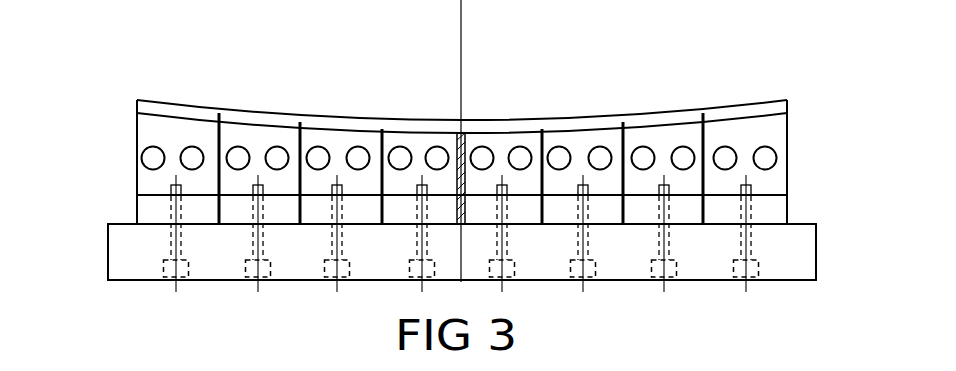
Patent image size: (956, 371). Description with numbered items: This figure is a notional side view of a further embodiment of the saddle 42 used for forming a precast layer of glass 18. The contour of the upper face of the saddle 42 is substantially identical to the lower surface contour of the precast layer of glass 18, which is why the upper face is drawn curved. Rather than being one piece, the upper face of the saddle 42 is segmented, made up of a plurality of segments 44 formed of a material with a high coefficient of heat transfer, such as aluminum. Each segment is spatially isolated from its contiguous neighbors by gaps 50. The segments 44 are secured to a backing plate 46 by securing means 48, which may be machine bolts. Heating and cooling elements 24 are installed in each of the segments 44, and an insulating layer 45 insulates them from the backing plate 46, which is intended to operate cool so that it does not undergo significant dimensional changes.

The precast layer of glass 18 is at (346, 117).
The heating and cooling elements 24 is at (148, 154).
The saddle 42 is at (454, 133).
The segments 44 is at (572, 147).
The insulating layer 45 is at (148, 212).
The backing plate 46 is at (777, 268).
The securing means 48 is at (741, 274).
The gaps 50 is at (220, 128).